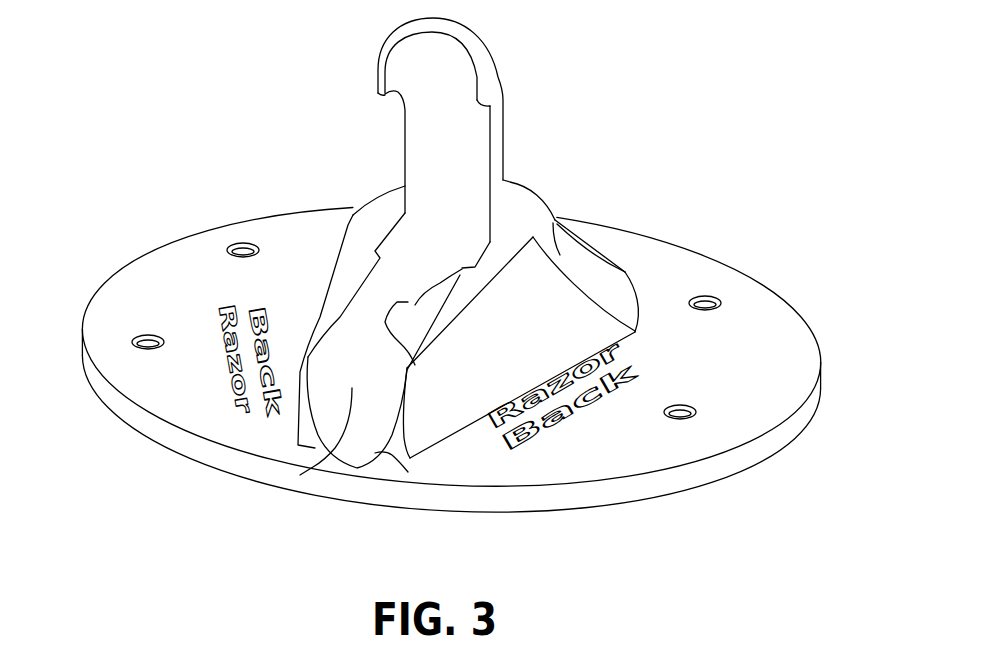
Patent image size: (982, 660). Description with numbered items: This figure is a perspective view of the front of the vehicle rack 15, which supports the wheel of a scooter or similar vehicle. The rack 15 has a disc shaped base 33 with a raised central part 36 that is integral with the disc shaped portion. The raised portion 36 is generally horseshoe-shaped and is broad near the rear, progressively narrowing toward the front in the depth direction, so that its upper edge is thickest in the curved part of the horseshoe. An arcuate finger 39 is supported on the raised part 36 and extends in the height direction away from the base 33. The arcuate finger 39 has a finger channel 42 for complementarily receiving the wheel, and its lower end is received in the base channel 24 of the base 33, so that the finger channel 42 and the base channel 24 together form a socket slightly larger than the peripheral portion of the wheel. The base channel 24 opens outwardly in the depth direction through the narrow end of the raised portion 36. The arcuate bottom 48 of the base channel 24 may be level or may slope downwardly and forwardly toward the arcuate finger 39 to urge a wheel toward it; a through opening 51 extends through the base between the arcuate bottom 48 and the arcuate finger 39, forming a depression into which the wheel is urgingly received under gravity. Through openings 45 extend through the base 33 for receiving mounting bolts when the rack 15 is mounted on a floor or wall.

The rack 15 is at (115, 427).
The base channel 24 is at (300, 475).
The disc shaped base 33 is at (763, 320).
The raised central part 36 is at (555, 220).
The arcuate finger 39 is at (483, 73).
The finger channel 42 is at (443, 123).
The through openings 45 is at (230, 243).
The arcuate bottom 48 is at (408, 472).
The through opening 51 is at (418, 308).